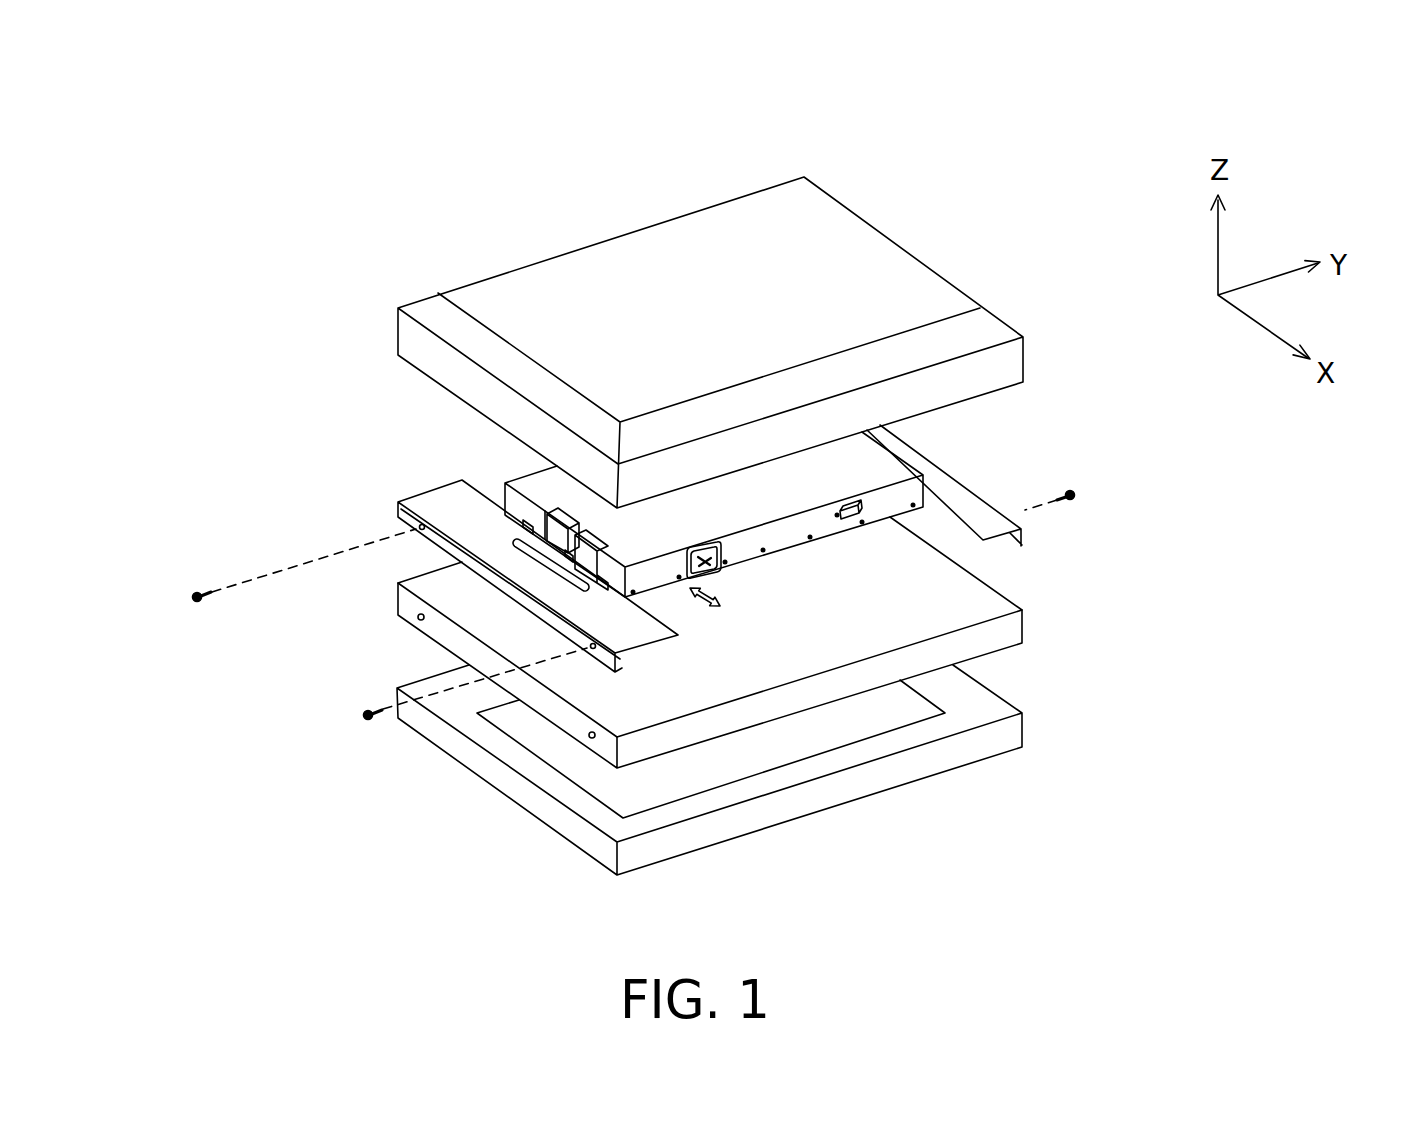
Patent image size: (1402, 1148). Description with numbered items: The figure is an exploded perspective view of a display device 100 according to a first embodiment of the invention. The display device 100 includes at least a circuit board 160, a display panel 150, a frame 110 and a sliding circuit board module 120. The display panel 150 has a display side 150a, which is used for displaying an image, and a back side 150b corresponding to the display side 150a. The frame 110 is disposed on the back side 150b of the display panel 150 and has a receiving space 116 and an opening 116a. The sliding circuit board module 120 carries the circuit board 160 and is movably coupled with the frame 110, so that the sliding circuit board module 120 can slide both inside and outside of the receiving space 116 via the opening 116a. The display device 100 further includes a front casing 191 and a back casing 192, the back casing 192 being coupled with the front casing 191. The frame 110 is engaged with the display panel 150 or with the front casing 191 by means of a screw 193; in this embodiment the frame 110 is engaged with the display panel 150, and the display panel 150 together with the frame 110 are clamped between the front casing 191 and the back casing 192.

The display device 100 is at (95, 203).
The frame 110 is at (873, 472).
The receiving space 116 is at (553, 483).
The opening 116a is at (758, 559).
The sliding circuit board module 120 is at (830, 524).
The display panel 150 is at (830, 718).
The display side 150a is at (692, 769).
The back side 150b is at (958, 595).
The circuit board 160 is at (520, 498).
The front casing 191 is at (582, 832).
The back casing 192 is at (413, 356).
The screw 193 is at (198, 604).